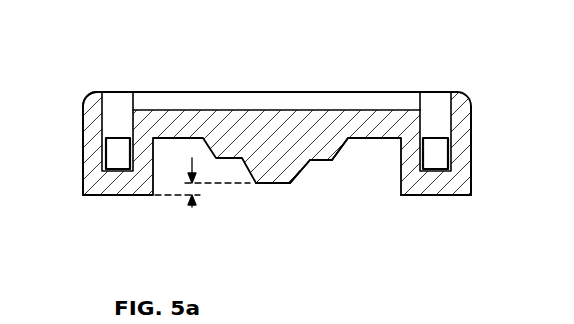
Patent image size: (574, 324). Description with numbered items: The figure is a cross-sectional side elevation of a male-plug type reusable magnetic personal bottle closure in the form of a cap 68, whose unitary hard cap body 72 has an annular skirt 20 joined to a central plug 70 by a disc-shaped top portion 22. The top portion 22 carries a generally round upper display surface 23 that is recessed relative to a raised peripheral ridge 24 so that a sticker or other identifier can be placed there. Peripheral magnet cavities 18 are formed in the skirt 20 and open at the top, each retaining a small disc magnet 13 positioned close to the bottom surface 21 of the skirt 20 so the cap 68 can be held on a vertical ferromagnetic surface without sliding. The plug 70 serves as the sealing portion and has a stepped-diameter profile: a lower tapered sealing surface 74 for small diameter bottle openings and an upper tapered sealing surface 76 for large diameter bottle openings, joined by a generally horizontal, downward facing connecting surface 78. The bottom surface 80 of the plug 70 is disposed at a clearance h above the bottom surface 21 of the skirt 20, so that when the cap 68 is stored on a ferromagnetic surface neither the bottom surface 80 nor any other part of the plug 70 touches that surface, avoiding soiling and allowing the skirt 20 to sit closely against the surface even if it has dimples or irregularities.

The magnets 13 is at (117, 137).
The magnet cavities 18 is at (111, 100).
The annular skirt 20 is at (435, 204).
The bottom surface of skirt 21 is at (458, 196).
The top portion 22 is at (322, 127).
The upper display surface 23 is at (262, 110).
The raised peripheral ridge 24 is at (87, 95).
The cap 68 is at (490, 131).
The plug 70 is at (264, 192).
The hard cap body 72 is at (76, 132).
The tapered sealing surface 74 is at (303, 172).
The tapered sealing surface 76 is at (348, 139).
The connecting surface 78 is at (329, 160).
The bottom surface of plug 80 is at (288, 184).
The clearance h is at (202, 201).